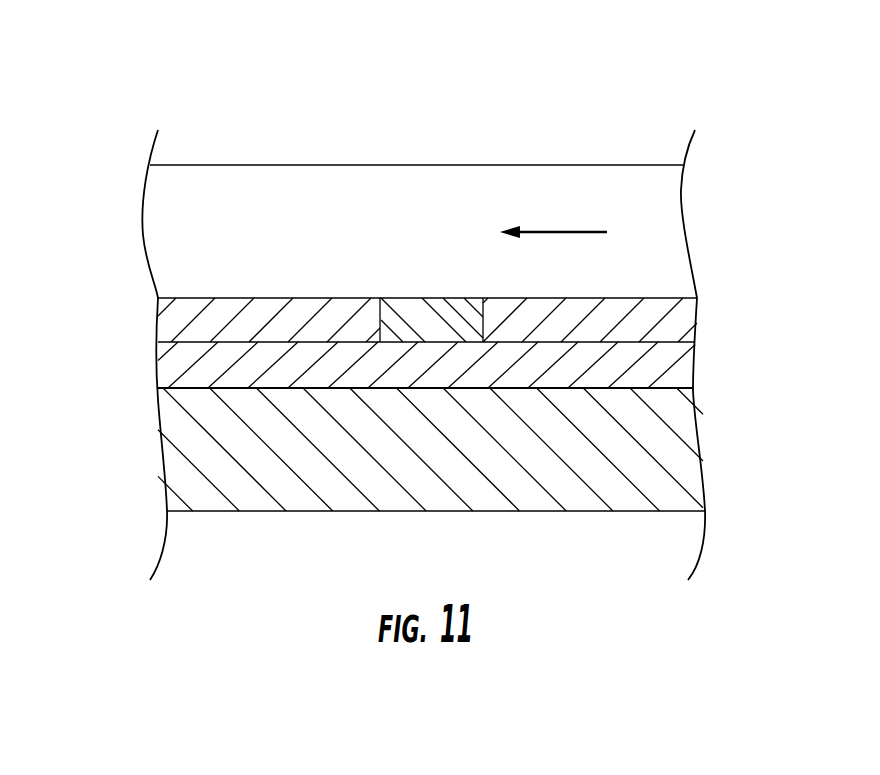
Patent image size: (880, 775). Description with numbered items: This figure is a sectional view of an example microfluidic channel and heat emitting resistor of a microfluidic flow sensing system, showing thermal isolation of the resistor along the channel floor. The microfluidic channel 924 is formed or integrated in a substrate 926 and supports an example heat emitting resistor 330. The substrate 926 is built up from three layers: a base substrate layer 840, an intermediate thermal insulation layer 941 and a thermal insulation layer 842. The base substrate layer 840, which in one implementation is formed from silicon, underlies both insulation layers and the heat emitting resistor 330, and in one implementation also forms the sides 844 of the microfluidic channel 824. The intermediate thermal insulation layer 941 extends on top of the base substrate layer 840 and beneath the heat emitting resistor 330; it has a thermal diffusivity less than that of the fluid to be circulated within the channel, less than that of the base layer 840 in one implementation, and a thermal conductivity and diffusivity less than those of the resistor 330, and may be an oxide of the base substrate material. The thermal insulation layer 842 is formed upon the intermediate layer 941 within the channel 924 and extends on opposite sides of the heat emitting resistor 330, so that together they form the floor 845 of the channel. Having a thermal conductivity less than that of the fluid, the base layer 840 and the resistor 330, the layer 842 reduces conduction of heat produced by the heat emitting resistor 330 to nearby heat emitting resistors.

The substrate 926 is at (140, 208).
The microfluidic channel 924 is at (198, 175).
The sides of microfluidic channel 844 is at (260, 198).
The microfluidic channel 824 is at (613, 168).
The thermal insulation layer 842 is at (205, 303).
The heat emitting resistor 330 is at (410, 303).
The floor of channel 845 is at (645, 302).
The intermediate thermal insulation layer 941 is at (165, 373).
The base substrate layer 840 is at (383, 483).